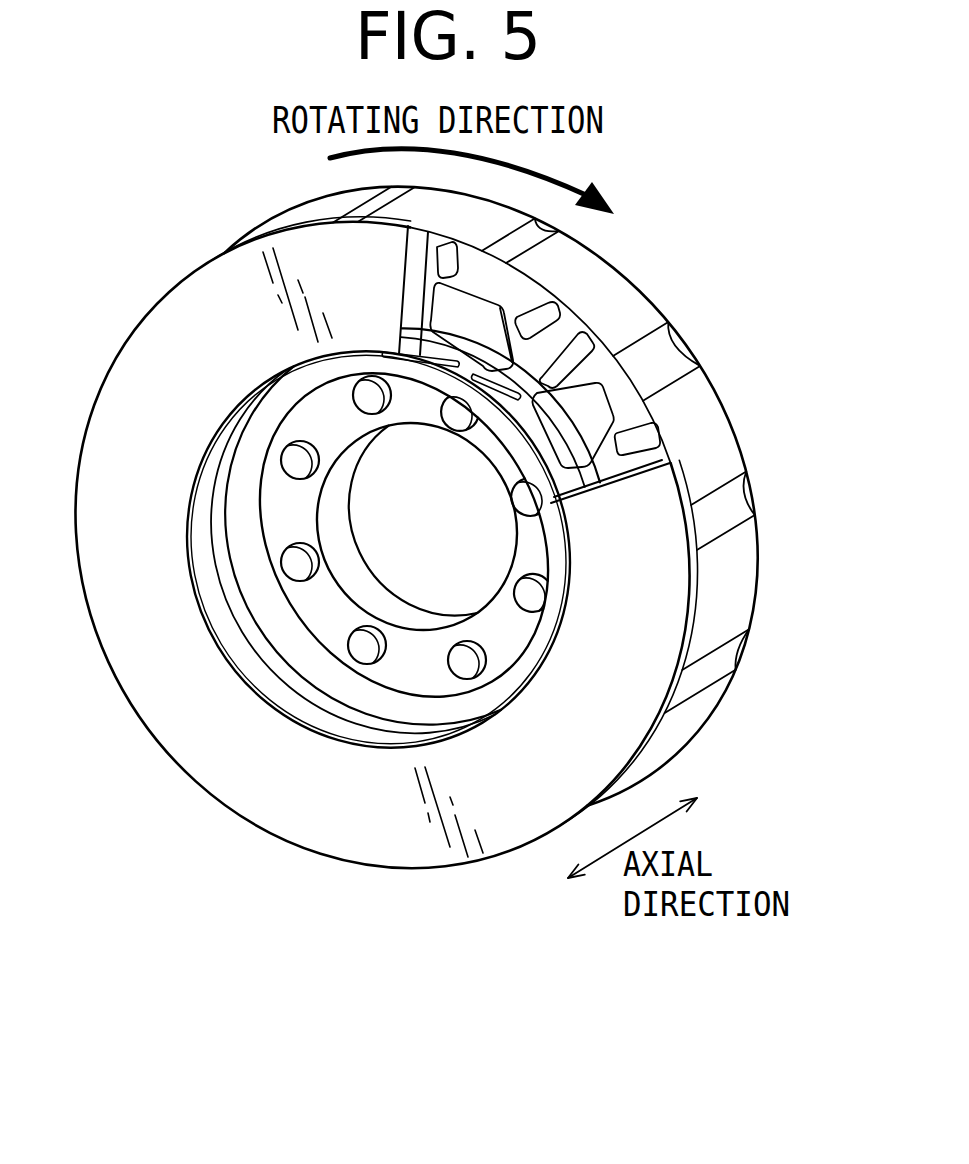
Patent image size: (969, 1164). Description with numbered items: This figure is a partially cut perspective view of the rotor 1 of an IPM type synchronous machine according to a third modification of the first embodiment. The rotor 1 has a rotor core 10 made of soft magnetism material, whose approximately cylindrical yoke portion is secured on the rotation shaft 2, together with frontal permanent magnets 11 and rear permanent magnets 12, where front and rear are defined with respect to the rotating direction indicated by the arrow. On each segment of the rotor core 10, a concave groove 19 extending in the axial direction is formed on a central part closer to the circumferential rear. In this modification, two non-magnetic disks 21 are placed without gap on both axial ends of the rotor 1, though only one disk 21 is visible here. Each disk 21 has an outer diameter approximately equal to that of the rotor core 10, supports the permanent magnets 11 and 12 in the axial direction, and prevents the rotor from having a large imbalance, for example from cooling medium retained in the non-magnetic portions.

The rotor 1 is at (458, 589).
The rotation shaft 2 is at (283, 623).
The rotor core 10 is at (727, 577).
The frontal permanent magnets 11 is at (670, 438).
The rear permanent magnets 12 is at (600, 327).
The concave groove 19 is at (727, 507).
The non-magnetic disk 21 is at (373, 823).